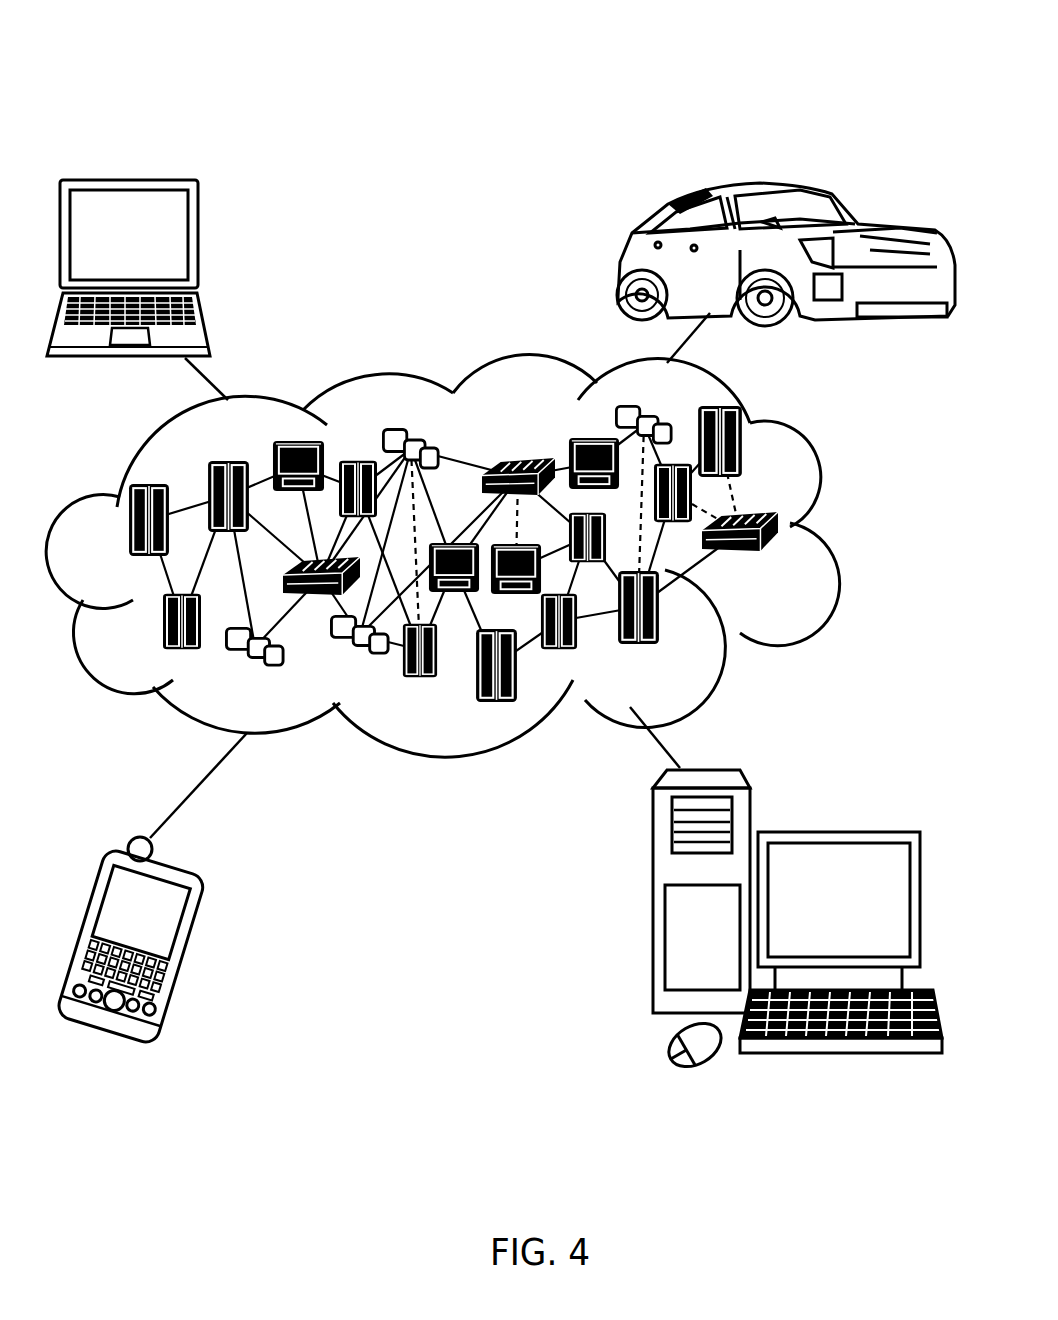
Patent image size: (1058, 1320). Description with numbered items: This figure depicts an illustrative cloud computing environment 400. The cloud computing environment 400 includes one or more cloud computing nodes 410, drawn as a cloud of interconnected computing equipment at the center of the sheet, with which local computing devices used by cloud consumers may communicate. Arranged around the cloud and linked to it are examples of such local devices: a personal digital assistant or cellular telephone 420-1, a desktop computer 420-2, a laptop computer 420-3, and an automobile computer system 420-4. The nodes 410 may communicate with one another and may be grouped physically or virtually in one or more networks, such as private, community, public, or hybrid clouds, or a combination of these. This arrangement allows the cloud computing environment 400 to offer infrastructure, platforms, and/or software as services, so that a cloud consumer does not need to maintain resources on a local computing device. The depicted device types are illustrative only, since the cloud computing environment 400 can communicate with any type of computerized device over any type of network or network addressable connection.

The cloud computing environment 400 is at (782, 40).
The cloud computing nodes 410 is at (790, 566).
The personal digital assistant (PDA) or cellular telephone 420-1 is at (186, 932).
The desktop computer 420-2 is at (835, 832).
The laptop computer 420-3 is at (199, 247).
The automobile computer system 420-4 is at (618, 258).